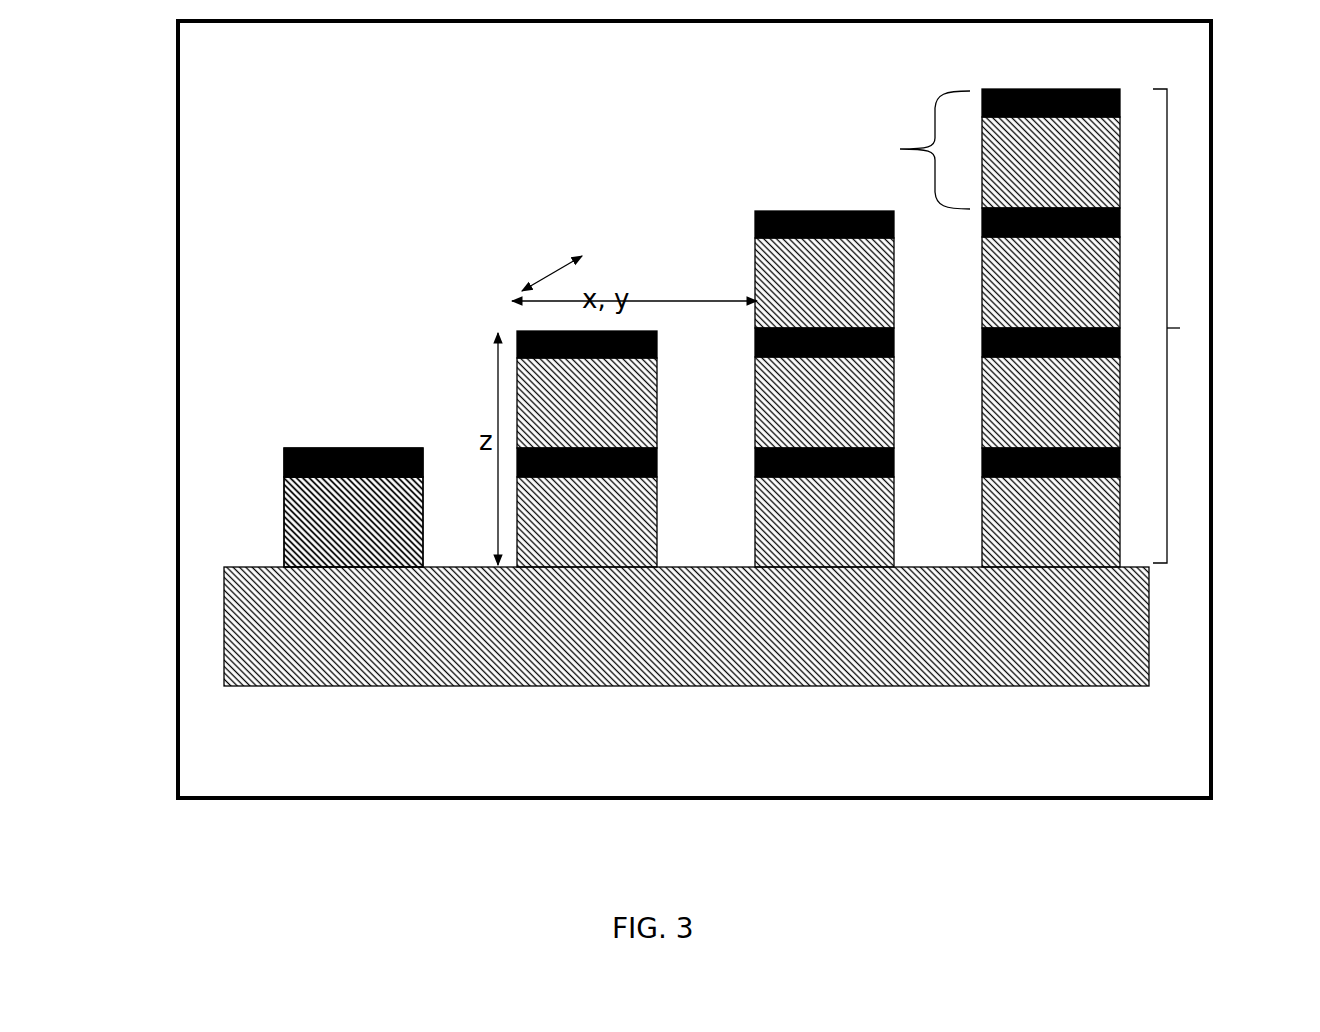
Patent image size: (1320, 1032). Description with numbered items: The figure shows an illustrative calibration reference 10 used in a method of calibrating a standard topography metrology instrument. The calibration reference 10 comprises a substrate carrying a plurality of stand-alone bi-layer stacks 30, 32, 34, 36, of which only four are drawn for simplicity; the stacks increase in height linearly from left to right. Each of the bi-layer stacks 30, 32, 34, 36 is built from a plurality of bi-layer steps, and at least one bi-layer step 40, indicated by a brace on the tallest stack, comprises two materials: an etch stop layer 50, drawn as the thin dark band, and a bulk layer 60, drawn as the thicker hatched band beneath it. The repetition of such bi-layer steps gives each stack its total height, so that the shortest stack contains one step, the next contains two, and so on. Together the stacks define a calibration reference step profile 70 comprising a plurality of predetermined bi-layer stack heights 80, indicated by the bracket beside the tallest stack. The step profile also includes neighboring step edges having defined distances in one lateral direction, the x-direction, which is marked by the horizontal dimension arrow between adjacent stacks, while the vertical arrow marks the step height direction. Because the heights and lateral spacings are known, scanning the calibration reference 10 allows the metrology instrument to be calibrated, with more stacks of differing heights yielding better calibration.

The calibration reference 10 is at (177, 750).
The bi-layer stack 30 is at (352, 569).
The bi-layer stack 32 is at (587, 569).
The bi-layer stack 34 is at (825, 569).
The bi-layer stack 36 is at (1059, 569).
The bi-layer step 40 is at (889, 149).
The etch stop layer 50 is at (284, 462).
The bulk layer 60 is at (284, 537).
The calibration reference step profile 70 is at (224, 603).
The predetermined bi-layer stack heights 80 is at (1190, 326).